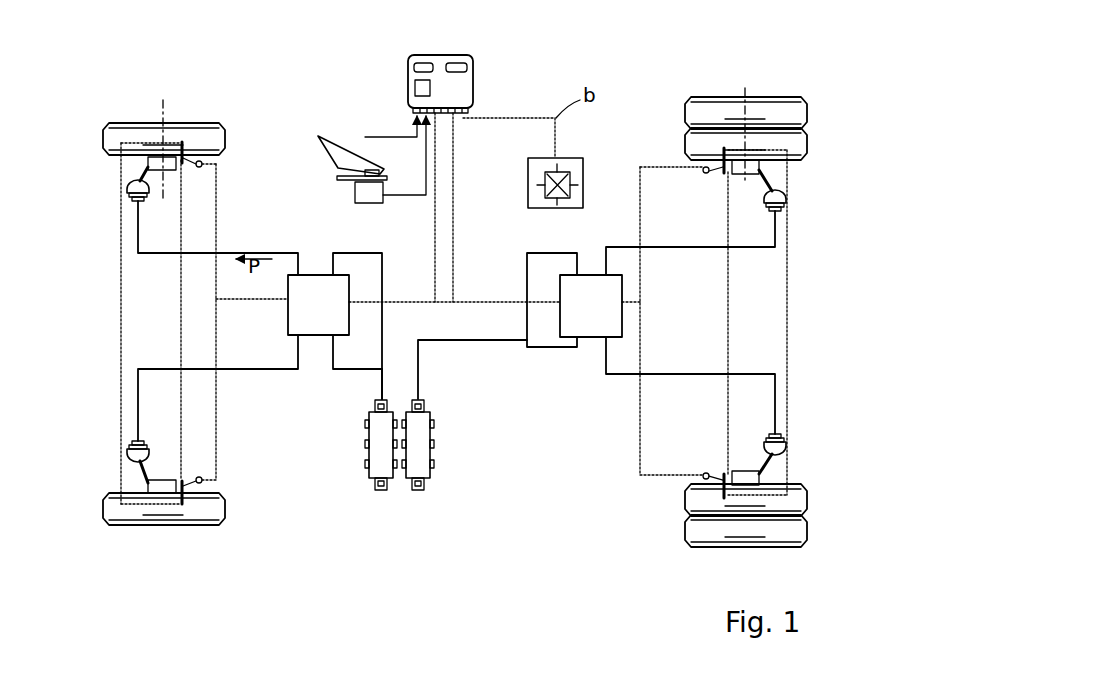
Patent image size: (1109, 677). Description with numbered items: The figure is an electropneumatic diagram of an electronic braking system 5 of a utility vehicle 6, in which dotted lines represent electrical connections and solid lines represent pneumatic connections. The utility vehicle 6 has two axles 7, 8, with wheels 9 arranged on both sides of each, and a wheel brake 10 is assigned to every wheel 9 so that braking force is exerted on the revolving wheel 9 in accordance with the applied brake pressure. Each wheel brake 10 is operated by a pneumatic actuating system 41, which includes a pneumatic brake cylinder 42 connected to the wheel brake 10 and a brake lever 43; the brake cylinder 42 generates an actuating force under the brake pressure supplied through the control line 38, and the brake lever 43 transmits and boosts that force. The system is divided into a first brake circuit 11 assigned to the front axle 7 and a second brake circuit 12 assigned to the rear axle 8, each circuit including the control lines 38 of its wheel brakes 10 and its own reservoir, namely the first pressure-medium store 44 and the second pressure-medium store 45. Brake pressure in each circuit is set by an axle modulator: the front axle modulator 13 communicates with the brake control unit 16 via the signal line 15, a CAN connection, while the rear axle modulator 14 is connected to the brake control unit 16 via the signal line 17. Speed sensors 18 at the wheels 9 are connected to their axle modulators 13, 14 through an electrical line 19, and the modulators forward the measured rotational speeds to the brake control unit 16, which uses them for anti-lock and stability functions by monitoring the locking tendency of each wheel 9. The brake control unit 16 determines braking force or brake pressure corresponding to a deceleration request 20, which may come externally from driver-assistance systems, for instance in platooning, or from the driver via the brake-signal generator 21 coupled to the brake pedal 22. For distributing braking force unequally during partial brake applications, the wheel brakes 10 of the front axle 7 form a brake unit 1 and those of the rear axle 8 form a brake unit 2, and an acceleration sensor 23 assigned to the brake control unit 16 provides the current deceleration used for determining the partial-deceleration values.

The brake unit 1 is at (120, 314).
The brake unit 2 is at (788, 312).
The electronic braking system 5 is at (272, 64).
The utility vehicle 6 is at (895, 77).
The axle 7 is at (166, 103).
The axle 8 is at (746, 92).
The wheel 9 is at (122, 140).
The wheel brake 10 is at (168, 172).
The first brake circuit 11 is at (380, 378).
The second brake circuit 12 is at (420, 366).
The front axle modulator 13 is at (318, 305).
The axle modulator 14 is at (591, 306).
The signal line 15 is at (435, 242).
The brake control unit 16 is at (474, 92).
The signal line 17 is at (455, 234).
The speed sensor 18 is at (205, 176).
The electrical line 19 is at (216, 287).
The deceleration request 20 is at (368, 137).
The brake-signal generator 21 is at (355, 194).
The brake pedal 22 is at (318, 138).
The acceleration sensor 23 is at (584, 166).
The control line 38 is at (283, 252).
The pneumatic actuating system 41 is at (110, 208).
The pneumatic brake cylinder 42 is at (126, 193).
The brake lever 43 is at (140, 172).
The first pressure-medium store 44 is at (368, 437).
The second pressure-medium store 45 is at (430, 437).